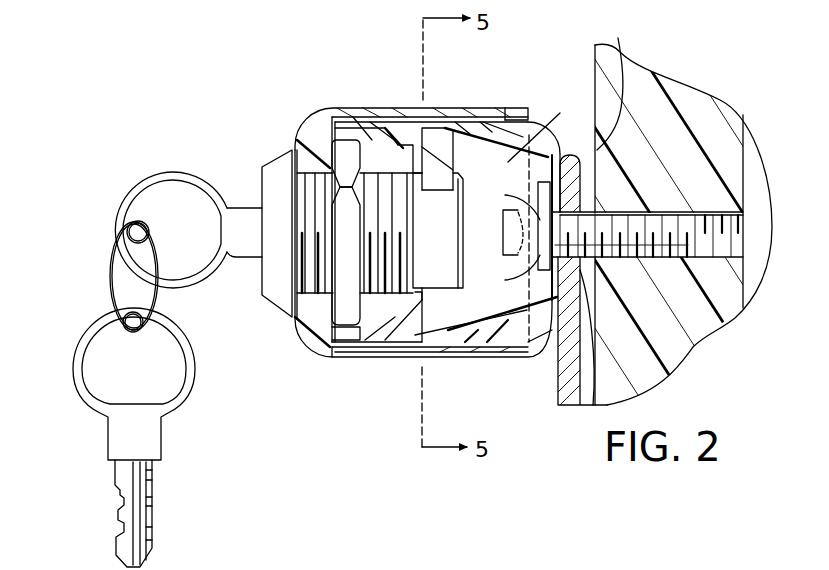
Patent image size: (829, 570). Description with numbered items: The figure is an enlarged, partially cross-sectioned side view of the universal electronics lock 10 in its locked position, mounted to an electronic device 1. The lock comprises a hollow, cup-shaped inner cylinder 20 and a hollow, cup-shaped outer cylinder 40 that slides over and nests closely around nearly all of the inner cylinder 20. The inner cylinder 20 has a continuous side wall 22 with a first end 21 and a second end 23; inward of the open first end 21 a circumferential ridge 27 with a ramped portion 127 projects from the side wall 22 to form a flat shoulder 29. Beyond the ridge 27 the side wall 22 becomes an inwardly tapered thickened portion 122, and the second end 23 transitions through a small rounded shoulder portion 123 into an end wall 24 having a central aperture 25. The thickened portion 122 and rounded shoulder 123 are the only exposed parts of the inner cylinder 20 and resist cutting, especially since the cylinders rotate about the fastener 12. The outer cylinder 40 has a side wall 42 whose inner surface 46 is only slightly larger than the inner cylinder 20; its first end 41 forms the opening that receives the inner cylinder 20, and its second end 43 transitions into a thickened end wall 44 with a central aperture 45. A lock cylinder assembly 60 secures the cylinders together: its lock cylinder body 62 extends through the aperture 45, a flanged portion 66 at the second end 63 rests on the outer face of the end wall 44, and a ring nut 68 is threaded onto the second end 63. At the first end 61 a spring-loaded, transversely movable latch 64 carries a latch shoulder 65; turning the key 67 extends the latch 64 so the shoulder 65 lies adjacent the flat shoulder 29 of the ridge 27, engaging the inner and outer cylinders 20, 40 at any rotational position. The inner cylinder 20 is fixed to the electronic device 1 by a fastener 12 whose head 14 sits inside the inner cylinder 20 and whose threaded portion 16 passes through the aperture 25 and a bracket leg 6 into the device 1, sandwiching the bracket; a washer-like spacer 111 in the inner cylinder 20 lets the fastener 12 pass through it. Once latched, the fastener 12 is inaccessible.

The electronic device 1 is at (700, 87).
The bracket leg 6 is at (570, 157).
The universal electronics lock 10 is at (510, 460).
The fastener 12 is at (687, 213).
The head 14 is at (505, 232).
The threaded portion 16 is at (666, 258).
The inner cylinder 20 is at (513, 110).
The first end 21 is at (367, 343).
The side wall 22 is at (463, 343).
The second end 23 is at (547, 338).
The end wall 24 is at (552, 293).
The aperture 25 is at (583, 199).
The circumferential ridge 27 is at (427, 138).
The flat shoulder 29 is at (425, 343).
The outer cylinder 40 is at (393, 110).
The first end 41 is at (523, 117).
The side wall 42 is at (450, 108).
The second end 43 is at (345, 110).
The end wall 44 is at (313, 130).
The aperture 45 is at (308, 165).
The inner surface 46 is at (487, 110).
The lock cylinder assembly 60 is at (257, 340).
The first end 61 is at (446, 283).
The lock cylinder body 62 is at (359, 314).
The second end 63 is at (323, 298).
The latch 64 is at (445, 172).
The shoulder 65 is at (409, 147).
The flanged portion 66 is at (267, 284).
The key 67 is at (150, 195).
The ring nut 68 is at (347, 322).
The spacer 111 is at (618, 82).
The thickened portion 122 is at (507, 330).
The rounded shoulder portion 123 is at (560, 113).
The ramped portion 127 is at (362, 110).